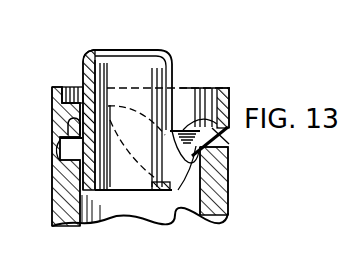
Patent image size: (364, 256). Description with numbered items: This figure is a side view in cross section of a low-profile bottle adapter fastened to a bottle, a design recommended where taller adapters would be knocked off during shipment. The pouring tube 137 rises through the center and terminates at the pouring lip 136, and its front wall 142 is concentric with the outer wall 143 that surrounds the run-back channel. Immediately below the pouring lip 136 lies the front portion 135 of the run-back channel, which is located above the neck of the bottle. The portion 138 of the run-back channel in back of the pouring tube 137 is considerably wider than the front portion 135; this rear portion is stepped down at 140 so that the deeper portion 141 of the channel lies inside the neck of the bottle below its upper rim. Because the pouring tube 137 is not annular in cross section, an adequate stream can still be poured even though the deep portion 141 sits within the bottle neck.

The front portion of the run-back channel 135 is at (77, 95).
The pouring lip 136 is at (82, 54).
The pouring tube 137 is at (123, 50).
The portion of the run-back channel in back of the pouring tube 138 is at (196, 88).
The step 140 is at (227, 132).
The deeper portion of the run-back channel 141 is at (196, 160).
The front wall of the pouring tube 142 is at (97, 73).
The outer wall 143 is at (55, 95).